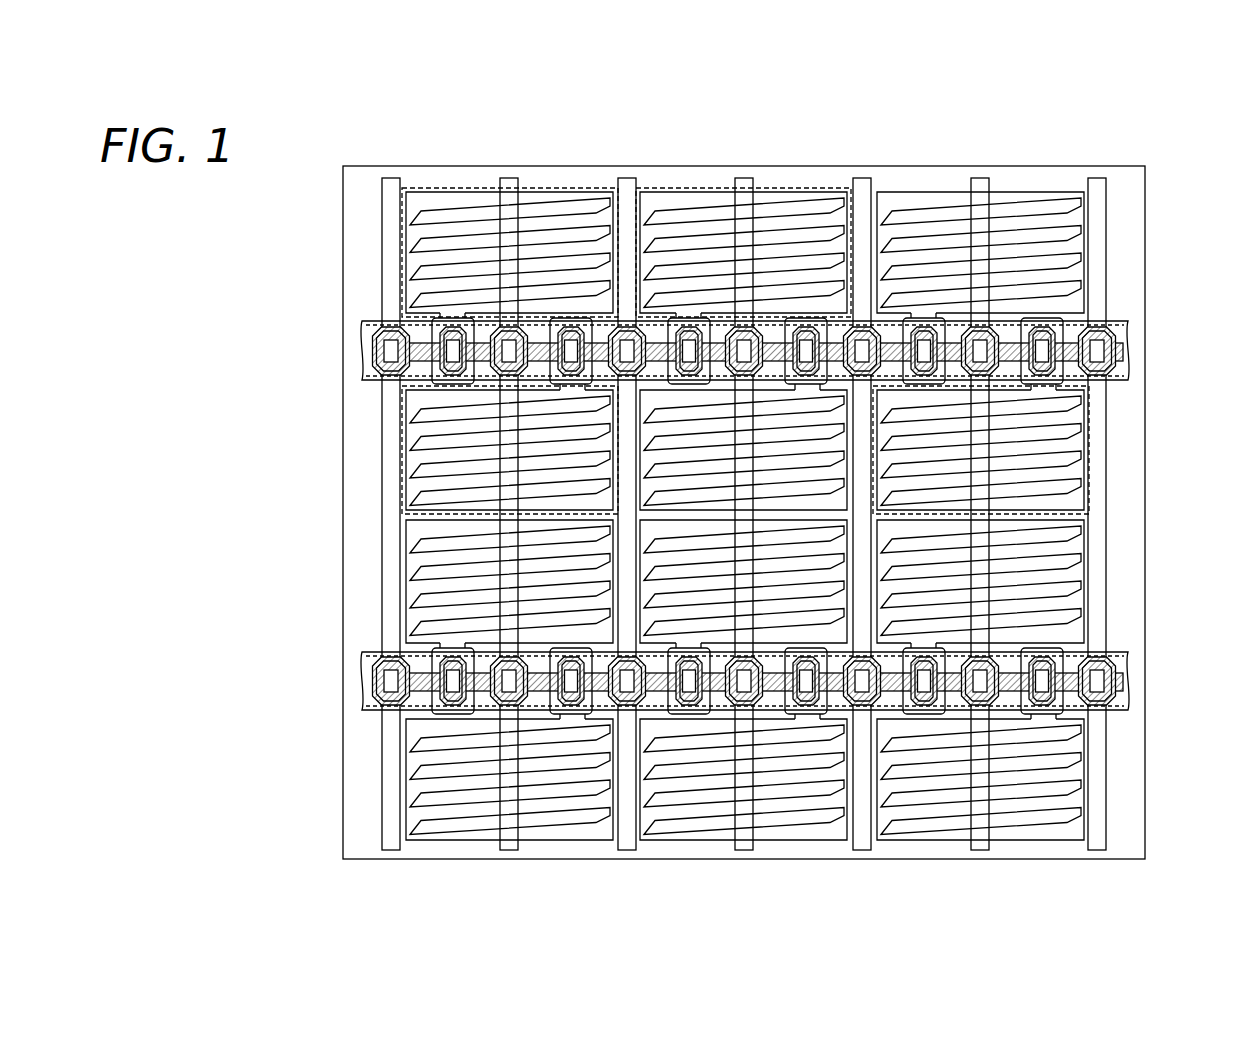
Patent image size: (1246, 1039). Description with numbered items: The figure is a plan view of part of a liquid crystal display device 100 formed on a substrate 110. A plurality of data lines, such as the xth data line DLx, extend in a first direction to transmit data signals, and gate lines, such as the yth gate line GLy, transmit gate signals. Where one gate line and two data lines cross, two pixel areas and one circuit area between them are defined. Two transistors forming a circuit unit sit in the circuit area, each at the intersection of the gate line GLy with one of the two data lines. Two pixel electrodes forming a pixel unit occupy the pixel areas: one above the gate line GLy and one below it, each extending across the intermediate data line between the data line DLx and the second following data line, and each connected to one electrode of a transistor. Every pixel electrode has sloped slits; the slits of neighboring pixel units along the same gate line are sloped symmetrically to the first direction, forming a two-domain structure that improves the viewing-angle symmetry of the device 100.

The liquid crystal display device 100 is at (308, 143).
The substrate 110 is at (1145, 200).
The xth data line DLx is at (394, 496).
The yth gate line GLy is at (713, 351).